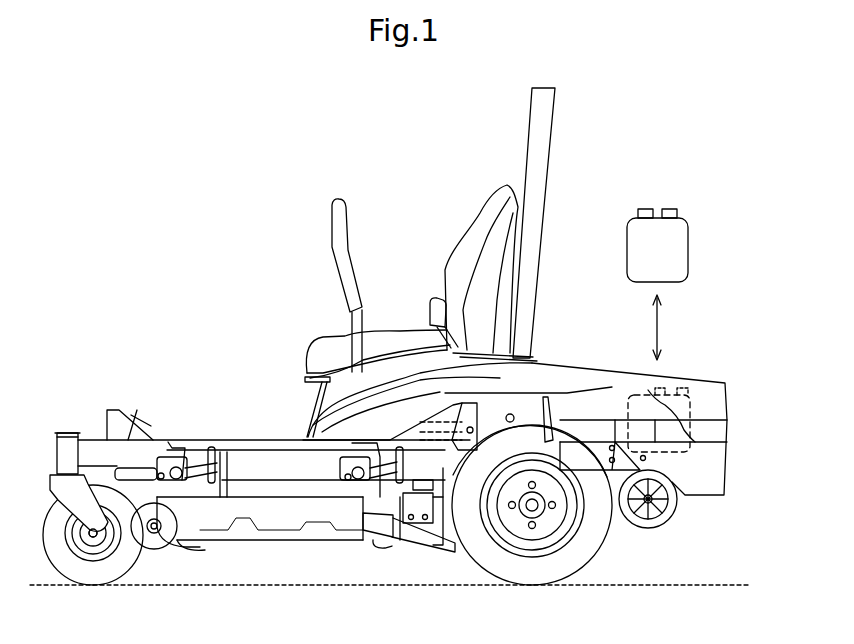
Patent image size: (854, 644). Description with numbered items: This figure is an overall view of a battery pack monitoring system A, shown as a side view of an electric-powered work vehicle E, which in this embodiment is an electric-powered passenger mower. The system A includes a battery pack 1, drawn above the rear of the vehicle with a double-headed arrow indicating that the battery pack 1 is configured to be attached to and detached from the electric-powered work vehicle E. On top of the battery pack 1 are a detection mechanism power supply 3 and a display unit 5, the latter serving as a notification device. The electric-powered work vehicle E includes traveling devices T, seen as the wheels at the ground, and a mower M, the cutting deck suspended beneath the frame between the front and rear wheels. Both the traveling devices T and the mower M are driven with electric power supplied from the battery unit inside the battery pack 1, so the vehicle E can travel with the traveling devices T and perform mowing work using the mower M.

The battery pack monitoring system A is at (722, 156).
The electric-powered work vehicle E is at (274, 351).
The mower M is at (248, 565).
The traveling devices T is at (614, 562).
The battery pack 1 is at (694, 230).
The detection mechanism power supply 3 is at (644, 208).
The display unit 5 is at (673, 208).